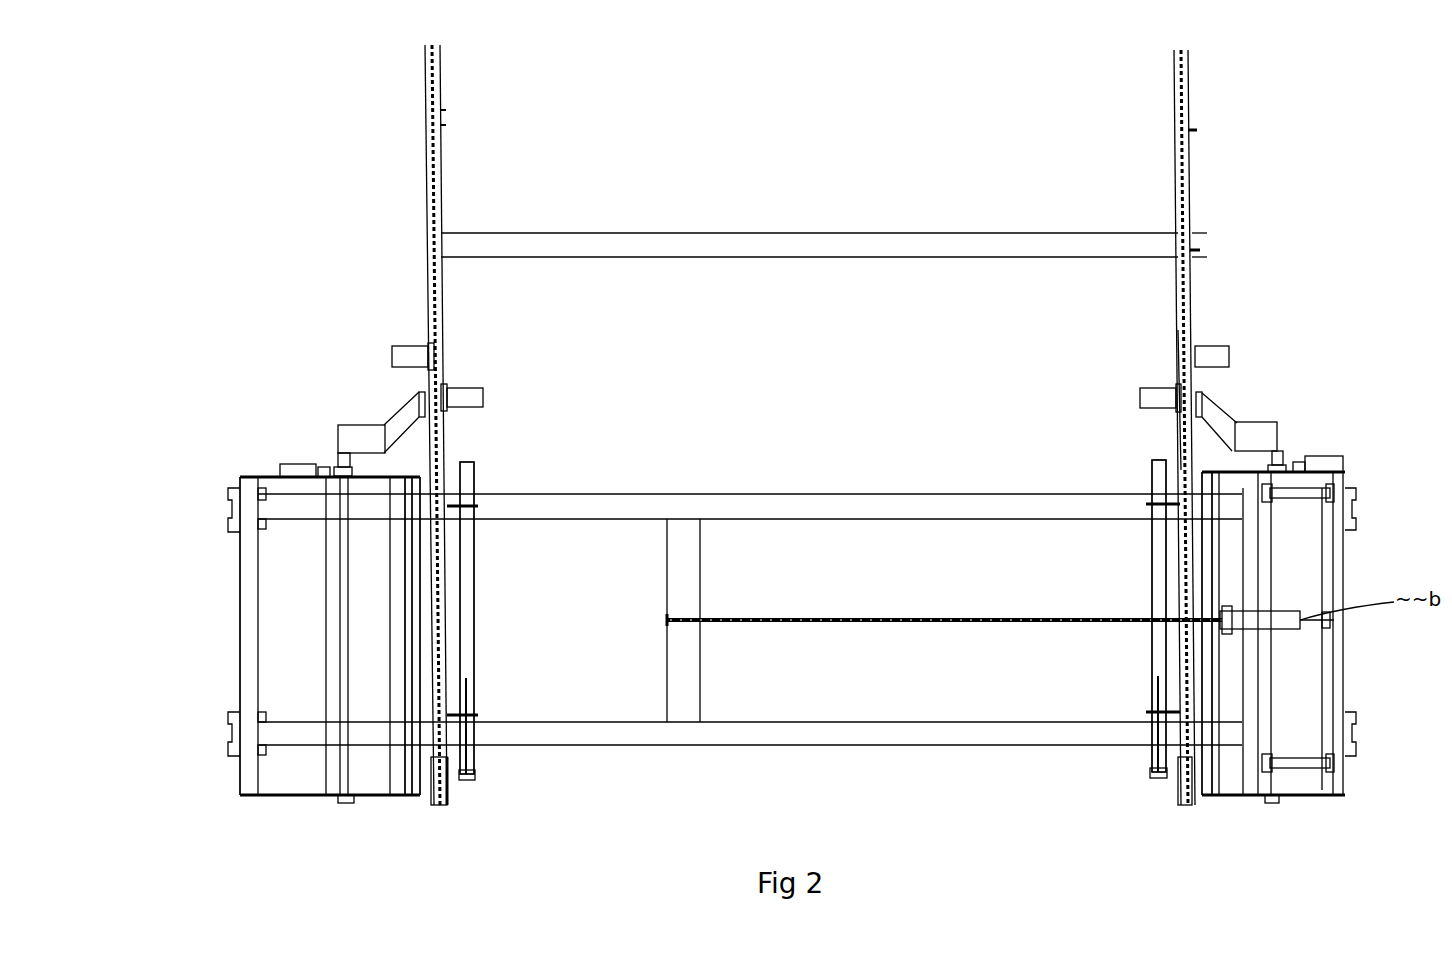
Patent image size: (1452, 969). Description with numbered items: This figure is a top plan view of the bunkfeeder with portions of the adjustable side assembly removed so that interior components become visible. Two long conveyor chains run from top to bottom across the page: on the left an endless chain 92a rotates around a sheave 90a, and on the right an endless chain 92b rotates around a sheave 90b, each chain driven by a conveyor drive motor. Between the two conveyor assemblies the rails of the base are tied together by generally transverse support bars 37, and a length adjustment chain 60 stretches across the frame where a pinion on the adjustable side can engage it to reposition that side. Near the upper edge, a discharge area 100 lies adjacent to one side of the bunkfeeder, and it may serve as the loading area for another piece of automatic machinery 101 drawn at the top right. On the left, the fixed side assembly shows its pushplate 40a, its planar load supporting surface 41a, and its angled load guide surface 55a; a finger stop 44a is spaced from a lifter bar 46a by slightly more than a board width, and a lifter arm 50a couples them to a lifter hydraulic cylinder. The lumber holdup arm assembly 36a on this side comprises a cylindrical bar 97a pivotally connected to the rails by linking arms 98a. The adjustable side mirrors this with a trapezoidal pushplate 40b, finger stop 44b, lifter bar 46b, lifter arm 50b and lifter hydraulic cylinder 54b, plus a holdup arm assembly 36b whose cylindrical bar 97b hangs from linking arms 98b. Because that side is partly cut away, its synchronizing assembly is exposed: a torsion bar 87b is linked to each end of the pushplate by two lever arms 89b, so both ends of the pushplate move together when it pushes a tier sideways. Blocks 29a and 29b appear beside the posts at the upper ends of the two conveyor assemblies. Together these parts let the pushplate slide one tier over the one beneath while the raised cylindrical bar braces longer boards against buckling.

The discharge area 100 is at (812, 330).
The automatic machinery 101 is at (1197, 195).
The transverse support bar 37 is at (252, 638).
The length adjustment chain 60 is at (866, 620).
The stop block 29a is at (475, 408).
The stop block 29b is at (1150, 388).
The lumber holdup arm assembly 36a is at (478, 480).
The lumber holdup arm assembly 36b is at (1150, 475).
The pushplate 40a is at (423, 395).
The trapezoidal pushplate 40b is at (1330, 586).
The planar load supporting surface 41a is at (398, 803).
The finger stop 44a is at (420, 396).
The finger stop 44b is at (1198, 392).
The lifter bar 46a is at (420, 798).
The lifter bar 46b is at (1205, 798).
The lifter arm 50a is at (375, 432).
The lifter arm 50b is at (1252, 428).
The lifter hydraulic cylinder 54b is at (1320, 466).
The angled load guide surface 55a is at (365, 800).
The torsion bar 87b is at (1275, 690).
The lever arm 89b is at (1342, 512).
The sheave 90a is at (452, 790).
The sheave 90b is at (1176, 380).
The endless chain 92a is at (448, 450).
The endless chain 92b is at (1180, 440).
The cylindrical bar 97a is at (474, 592).
The cylindrical bar 97b is at (1158, 562).
The linking arm 98a is at (466, 510).
The linking arm 98b is at (1162, 505).